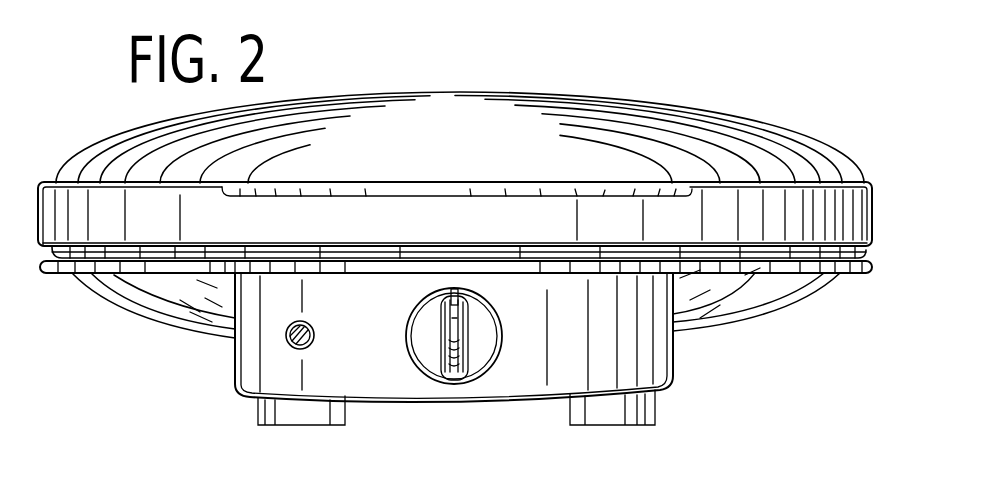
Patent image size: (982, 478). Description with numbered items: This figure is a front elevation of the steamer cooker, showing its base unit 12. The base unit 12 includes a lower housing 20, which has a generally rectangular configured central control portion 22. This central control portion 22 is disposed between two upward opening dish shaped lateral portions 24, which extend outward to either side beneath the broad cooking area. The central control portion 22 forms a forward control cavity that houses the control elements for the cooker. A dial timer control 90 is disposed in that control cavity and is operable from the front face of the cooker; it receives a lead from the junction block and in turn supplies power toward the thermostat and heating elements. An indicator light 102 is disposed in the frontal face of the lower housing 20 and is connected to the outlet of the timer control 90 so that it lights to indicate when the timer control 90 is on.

The base unit 12 is at (198, 340).
The lower housing 20 is at (746, 318).
The central control portion 22 is at (677, 363).
The lateral portions 24 is at (158, 318).
The dial timer control 90 is at (503, 347).
The indicator light 102 is at (313, 325).